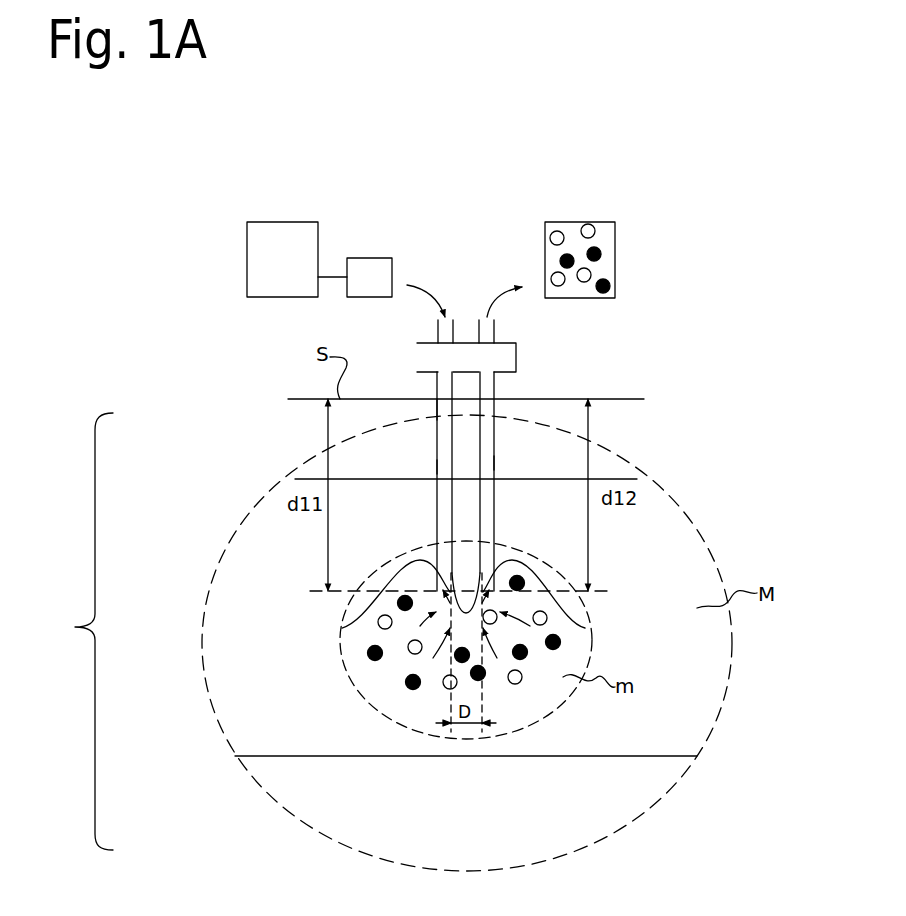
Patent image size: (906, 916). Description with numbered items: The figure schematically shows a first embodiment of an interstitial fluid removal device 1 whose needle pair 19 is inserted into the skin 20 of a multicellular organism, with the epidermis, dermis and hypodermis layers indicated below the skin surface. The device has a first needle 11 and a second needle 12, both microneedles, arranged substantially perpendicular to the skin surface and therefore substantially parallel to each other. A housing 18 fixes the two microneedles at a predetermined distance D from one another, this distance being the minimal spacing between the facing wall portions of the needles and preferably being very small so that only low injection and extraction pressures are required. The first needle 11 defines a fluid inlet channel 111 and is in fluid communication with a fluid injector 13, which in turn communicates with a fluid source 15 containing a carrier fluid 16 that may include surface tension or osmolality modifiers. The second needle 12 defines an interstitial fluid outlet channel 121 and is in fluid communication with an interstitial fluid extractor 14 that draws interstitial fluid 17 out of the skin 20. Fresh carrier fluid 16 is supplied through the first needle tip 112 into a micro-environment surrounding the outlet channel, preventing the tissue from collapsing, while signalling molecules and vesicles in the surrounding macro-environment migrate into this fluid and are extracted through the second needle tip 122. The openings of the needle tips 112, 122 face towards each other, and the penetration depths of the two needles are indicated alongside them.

The interstitial fluid removal device 1 is at (472, 466).
The first needle 11 is at (443, 512).
The second needle 12 is at (487, 527).
The fluid injector 13 is at (387, 288).
The interstitial fluid extractor 14 is at (605, 238).
The fluid source 15 is at (302, 264).
The fluid 16 is at (430, 290).
The interstitial fluid 17 is at (500, 290).
The housing 18 is at (507, 357).
The needle pair 19 is at (427, 412).
The skin 20 is at (134, 631).
The fluid inlet channel 111 is at (433, 465).
The first needle tip 112 is at (342, 627).
The interstitial fluid outlet channel 121 is at (501, 464).
The second needle tip 122 is at (588, 627).